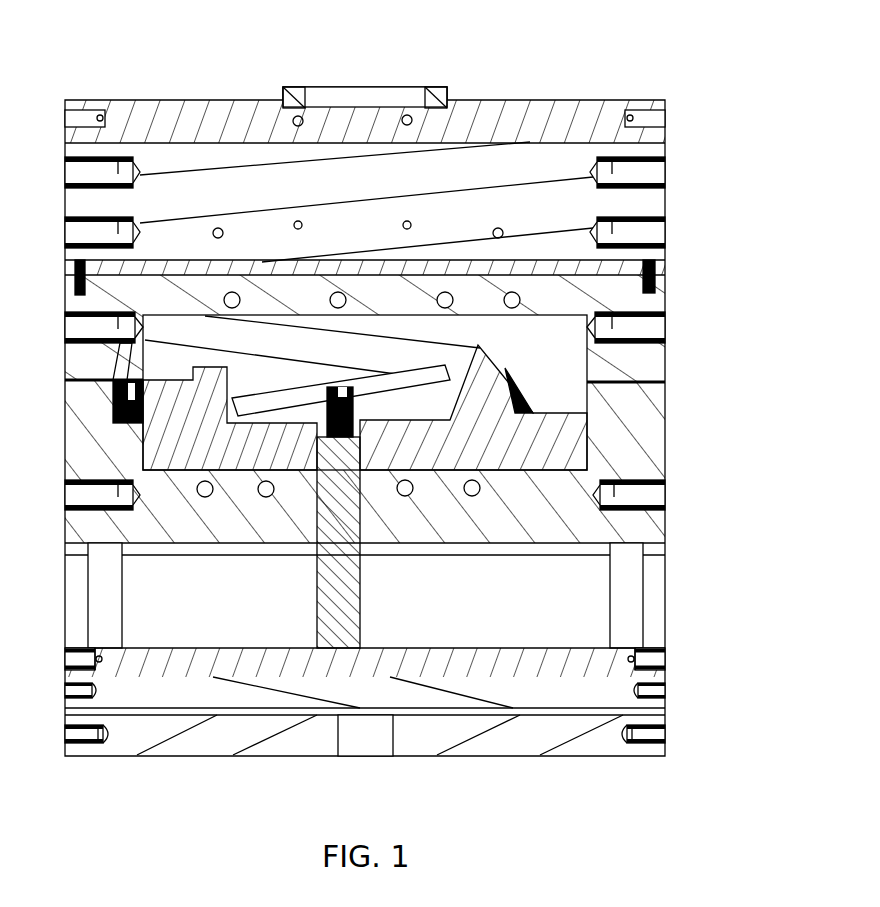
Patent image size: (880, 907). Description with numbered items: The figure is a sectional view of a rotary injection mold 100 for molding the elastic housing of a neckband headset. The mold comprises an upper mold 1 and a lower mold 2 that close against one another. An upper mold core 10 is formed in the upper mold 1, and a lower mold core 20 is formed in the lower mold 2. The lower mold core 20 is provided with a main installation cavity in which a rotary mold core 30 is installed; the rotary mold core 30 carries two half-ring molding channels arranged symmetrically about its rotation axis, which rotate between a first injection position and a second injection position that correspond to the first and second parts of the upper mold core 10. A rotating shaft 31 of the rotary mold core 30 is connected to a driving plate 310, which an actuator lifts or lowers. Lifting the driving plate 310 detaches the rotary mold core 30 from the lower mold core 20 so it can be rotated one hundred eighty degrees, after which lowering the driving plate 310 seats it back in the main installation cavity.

The rotary injection mold 100 is at (112, 33).
The upper mold 1 is at (521, 120).
The lower mold 2 is at (543, 507).
The upper mold core 10 is at (533, 350).
The lower mold core 20 is at (537, 432).
The rotary mold core 30 is at (540, 408).
The rotating shaft 31 is at (362, 577).
The driving plate 310 is at (523, 667).